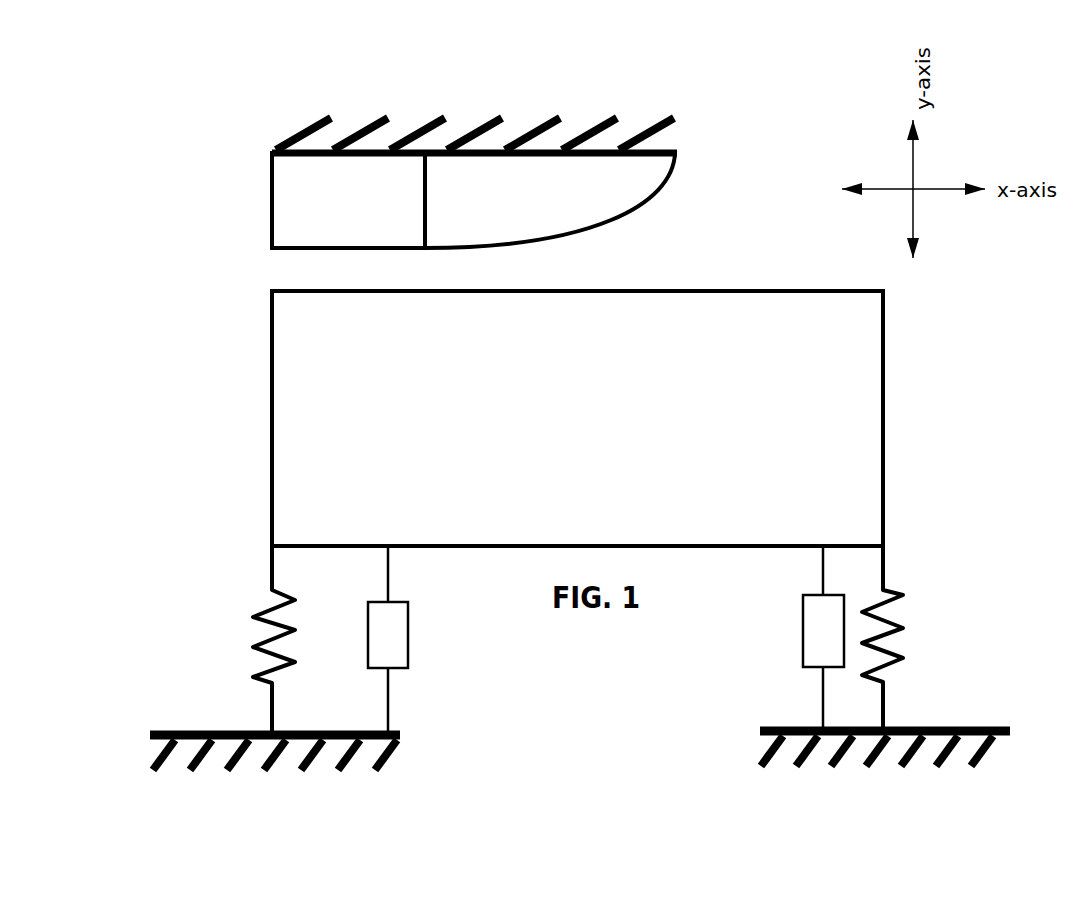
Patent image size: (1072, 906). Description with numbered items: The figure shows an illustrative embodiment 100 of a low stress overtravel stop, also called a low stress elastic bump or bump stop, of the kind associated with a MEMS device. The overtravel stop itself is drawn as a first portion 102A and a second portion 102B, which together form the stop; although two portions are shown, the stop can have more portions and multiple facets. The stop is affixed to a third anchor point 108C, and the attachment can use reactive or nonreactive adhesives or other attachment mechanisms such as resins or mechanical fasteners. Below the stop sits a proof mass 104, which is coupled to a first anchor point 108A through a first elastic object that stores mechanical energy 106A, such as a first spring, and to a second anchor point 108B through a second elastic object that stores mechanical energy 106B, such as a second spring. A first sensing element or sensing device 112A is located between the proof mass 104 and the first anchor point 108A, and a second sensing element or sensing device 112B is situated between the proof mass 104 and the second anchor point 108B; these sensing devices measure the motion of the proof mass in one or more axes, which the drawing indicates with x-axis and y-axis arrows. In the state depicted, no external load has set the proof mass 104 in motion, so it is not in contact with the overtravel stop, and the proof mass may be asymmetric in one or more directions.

The illustrative embodiment of a low stress overtravel stop 100 is at (382, 72).
The first portion 102A is at (284, 250).
The second portion 102B is at (648, 200).
The proof mass 104 is at (885, 390).
The first elastic object that stores mechanical energy 106A is at (890, 590).
The second elastic object that stores mechanical energy 106B is at (272, 590).
The first anchor point 108A is at (945, 725).
The second anchor point 108B is at (165, 722).
The third anchor point 108C is at (678, 152).
The first sensing element or sensing device 112A is at (806, 625).
The second sensing element or sensing device 112B is at (403, 620).